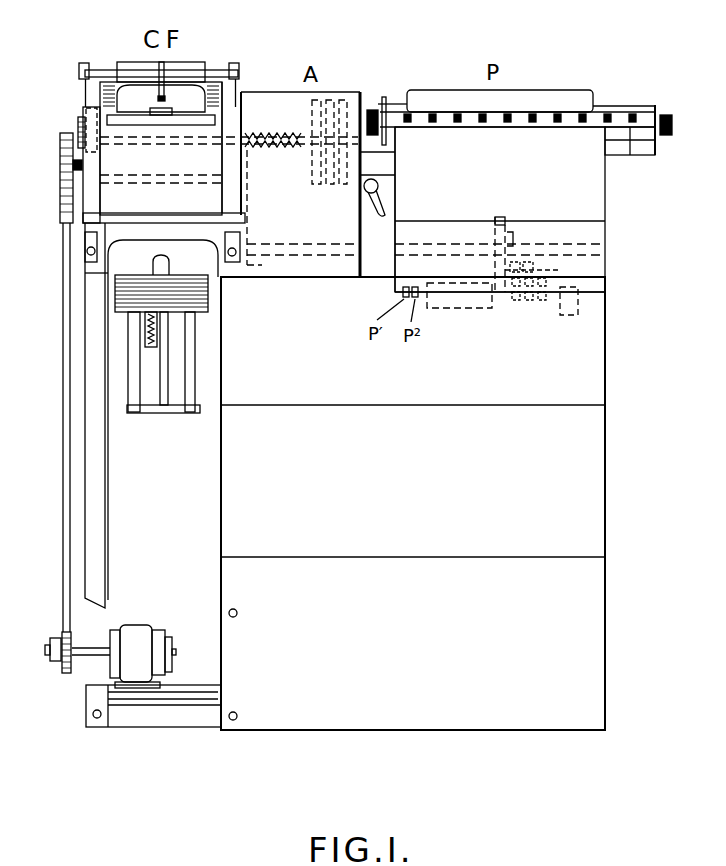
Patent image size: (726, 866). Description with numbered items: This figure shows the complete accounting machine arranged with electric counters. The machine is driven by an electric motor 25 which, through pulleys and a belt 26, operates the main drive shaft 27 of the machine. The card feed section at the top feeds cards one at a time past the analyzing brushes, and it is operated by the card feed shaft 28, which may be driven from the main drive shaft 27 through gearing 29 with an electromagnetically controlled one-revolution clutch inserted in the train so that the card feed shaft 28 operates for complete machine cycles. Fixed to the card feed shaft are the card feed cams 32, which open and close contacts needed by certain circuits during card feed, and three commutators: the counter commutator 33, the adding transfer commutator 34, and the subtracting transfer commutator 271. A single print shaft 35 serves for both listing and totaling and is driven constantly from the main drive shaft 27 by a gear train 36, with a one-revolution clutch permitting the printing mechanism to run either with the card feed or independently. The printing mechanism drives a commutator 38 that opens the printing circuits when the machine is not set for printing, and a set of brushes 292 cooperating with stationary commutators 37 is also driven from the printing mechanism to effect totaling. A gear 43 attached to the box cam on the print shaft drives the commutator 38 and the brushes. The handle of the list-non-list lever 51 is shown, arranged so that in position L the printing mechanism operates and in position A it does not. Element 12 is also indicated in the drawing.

The guide rod 12 is at (503, 218).
The electric motor 25 is at (140, 634).
The pulleys and belt 26 is at (64, 362).
The main drive shaft 27 is at (172, 181).
The card feed shaft 28 is at (138, 139).
The gearing 29 is at (78, 166).
The card feed cams 32 is at (268, 146).
The counter commutator 33 is at (316, 100).
The adding transfer commutator 34 is at (342, 100).
The print shaft 35 is at (422, 247).
The gear train 36 is at (246, 206).
The stationary commutators 37 is at (527, 294).
The commutator 38 is at (447, 304).
The gear 43 is at (512, 236).
The list-non-list lever 51 is at (380, 192).
The subtracting transfer commutator 271 is at (329, 100).
The set of brushes 292 is at (536, 273).